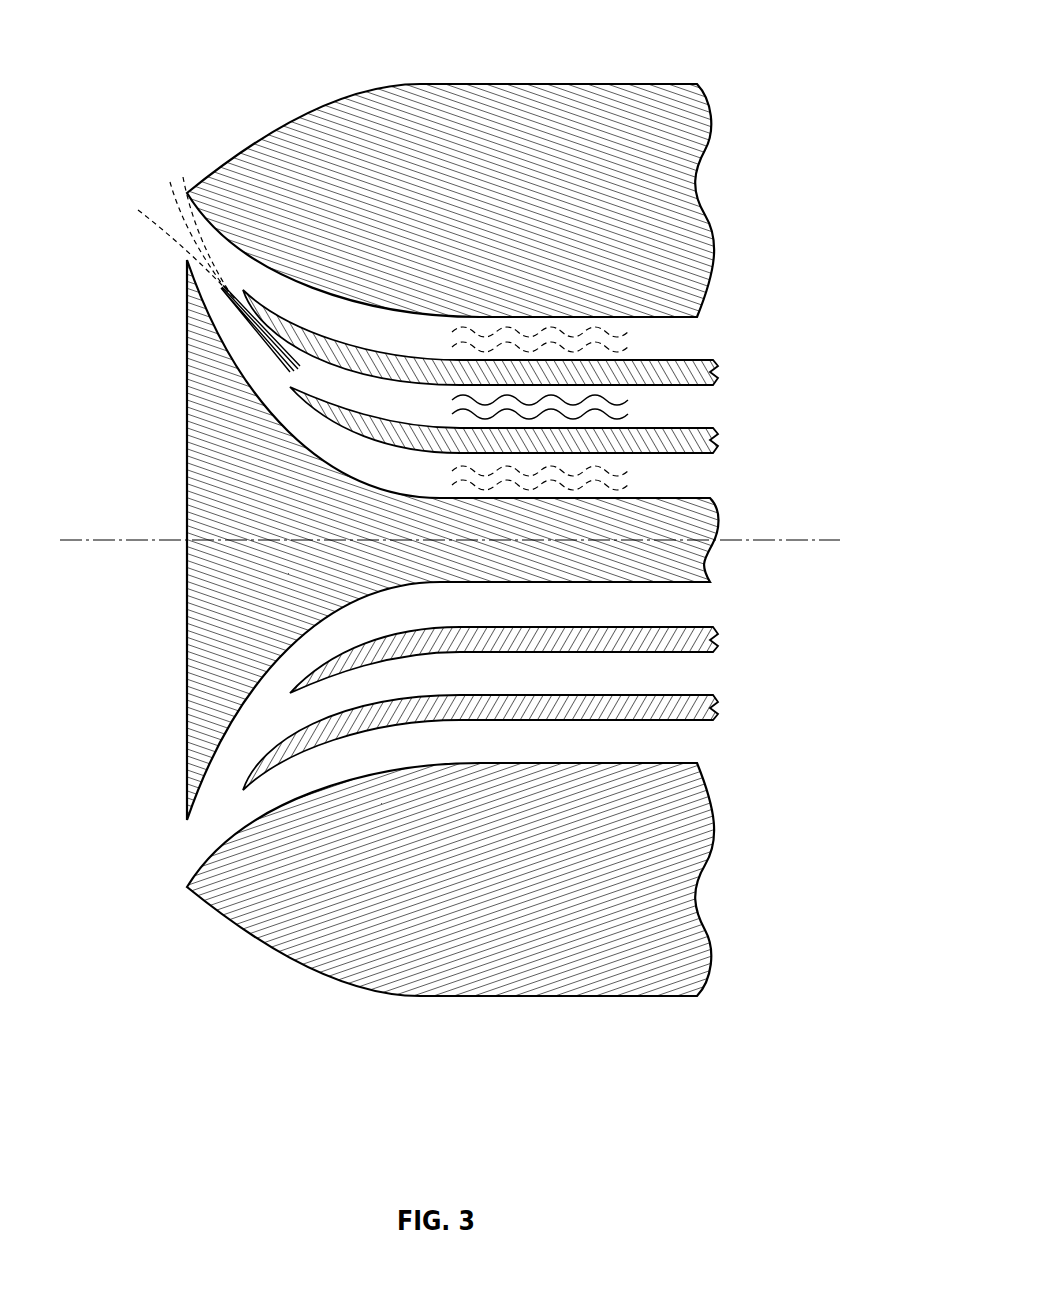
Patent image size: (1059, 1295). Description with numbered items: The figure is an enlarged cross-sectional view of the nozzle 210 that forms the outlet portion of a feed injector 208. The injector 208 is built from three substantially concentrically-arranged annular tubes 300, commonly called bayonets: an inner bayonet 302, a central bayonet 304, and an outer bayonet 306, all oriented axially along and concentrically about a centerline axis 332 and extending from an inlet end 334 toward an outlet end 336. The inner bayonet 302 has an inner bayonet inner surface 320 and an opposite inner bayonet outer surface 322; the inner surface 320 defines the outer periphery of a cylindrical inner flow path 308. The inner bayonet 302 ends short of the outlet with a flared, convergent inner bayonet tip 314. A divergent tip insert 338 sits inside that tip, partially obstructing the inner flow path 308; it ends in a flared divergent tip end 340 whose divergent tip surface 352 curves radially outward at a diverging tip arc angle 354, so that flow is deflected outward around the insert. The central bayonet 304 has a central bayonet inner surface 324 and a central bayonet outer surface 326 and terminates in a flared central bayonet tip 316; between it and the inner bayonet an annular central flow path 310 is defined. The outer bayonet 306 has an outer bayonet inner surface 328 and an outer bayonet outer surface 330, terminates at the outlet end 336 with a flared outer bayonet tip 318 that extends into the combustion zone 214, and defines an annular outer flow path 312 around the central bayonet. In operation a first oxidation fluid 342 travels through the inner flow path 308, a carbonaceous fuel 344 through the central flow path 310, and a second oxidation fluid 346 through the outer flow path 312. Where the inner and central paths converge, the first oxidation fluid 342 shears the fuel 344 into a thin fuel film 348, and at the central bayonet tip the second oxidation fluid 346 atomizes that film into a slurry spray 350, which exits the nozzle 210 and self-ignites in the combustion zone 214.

The annular tubes 300 is at (155, 32).
The inner bayonet 302 is at (553, 540).
The central bayonet 304 is at (530, 540).
The outer bayonet 306 is at (502, 540).
The inner flow path 308 is at (713, 600).
The central flow path 310 is at (713, 670).
The outer flow path 312 is at (713, 736).
The inner bayonet tip 314 is at (452, 626).
The central bayonet tip 316 is at (412, 697).
The outer bayonet tip 318 is at (410, 764).
The inner bayonet inner surface 320 is at (560, 624).
The inner bayonet outer surface 322 is at (497, 655).
The central bayonet inner surface 324 is at (580, 693).
The central bayonet outer surface 326 is at (568, 722).
The outer bayonet inner surface 328 is at (497, 762).
The outer bayonet outer surface 330 is at (493, 996).
The centerline axis 332 is at (150, 540).
The inlet end 334 is at (835, 461).
The outlet end 336 is at (96, 278).
The divergent tip insert 338 is at (700, 498).
The divergent tip end 340 is at (186, 457).
The first oxidation fluid 342 is at (591, 474).
The carbonaceous fuel 344 is at (591, 406).
The second oxidation fluid 346 is at (591, 337).
The thin fuel film 348 is at (204, 337).
The slurry spray 350 is at (157, 222).
The divergent tip surface 352 is at (348, 600).
The diverging tip arc angle 354 is at (337, 454).
The feed injector 208 is at (614, 1039).
The nozzle 210 is at (374, 1041).
The combustion zone 214 is at (130, 763).